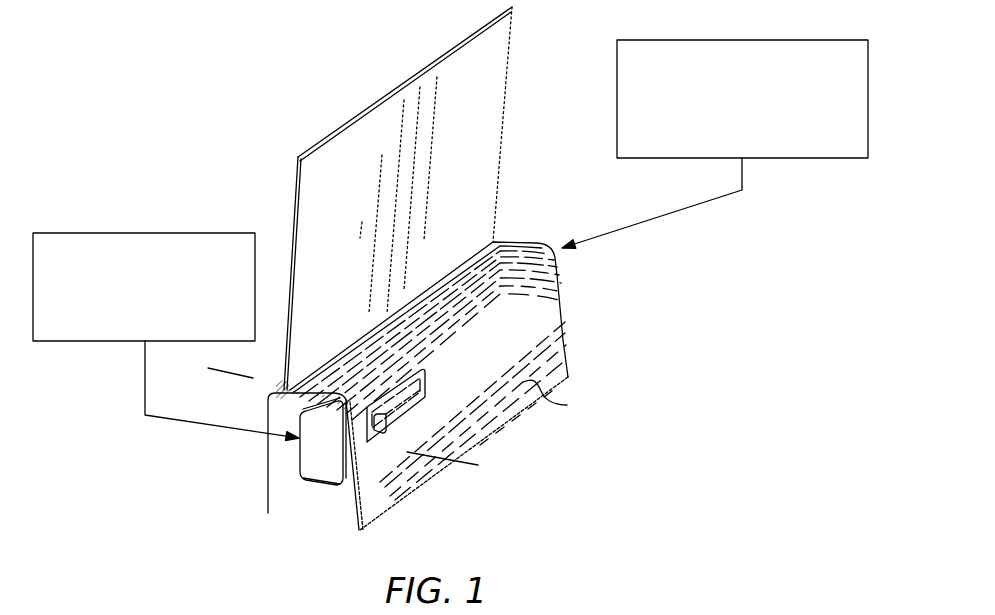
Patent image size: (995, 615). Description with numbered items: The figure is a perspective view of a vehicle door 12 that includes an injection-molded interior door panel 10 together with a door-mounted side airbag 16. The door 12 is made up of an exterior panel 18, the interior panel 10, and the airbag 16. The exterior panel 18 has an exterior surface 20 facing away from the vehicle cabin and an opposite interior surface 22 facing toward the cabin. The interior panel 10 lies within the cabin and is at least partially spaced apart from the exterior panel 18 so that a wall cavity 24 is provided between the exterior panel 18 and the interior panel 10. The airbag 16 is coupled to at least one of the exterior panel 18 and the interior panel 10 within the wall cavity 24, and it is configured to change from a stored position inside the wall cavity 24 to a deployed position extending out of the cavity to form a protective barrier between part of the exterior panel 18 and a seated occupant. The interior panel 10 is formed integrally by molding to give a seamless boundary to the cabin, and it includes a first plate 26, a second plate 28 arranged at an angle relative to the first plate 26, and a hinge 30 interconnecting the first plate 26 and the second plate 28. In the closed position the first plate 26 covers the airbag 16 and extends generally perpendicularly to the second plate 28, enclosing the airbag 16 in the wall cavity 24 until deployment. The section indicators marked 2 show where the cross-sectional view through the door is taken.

The section line 2- 2 is at (258, 360).
The interior door panel 10 is at (572, 285).
The door 12 is at (532, 65).
The side airbag 16 is at (144, 233).
The exterior panel 18 is at (253, 468).
The exterior surface 20 is at (267, 453).
The interior surface 22 is at (277, 493).
The wall cavity 24 is at (317, 503).
The first plate 26 is at (512, 238).
The second plate 28 is at (544, 320).
The hinge 30 is at (535, 272).